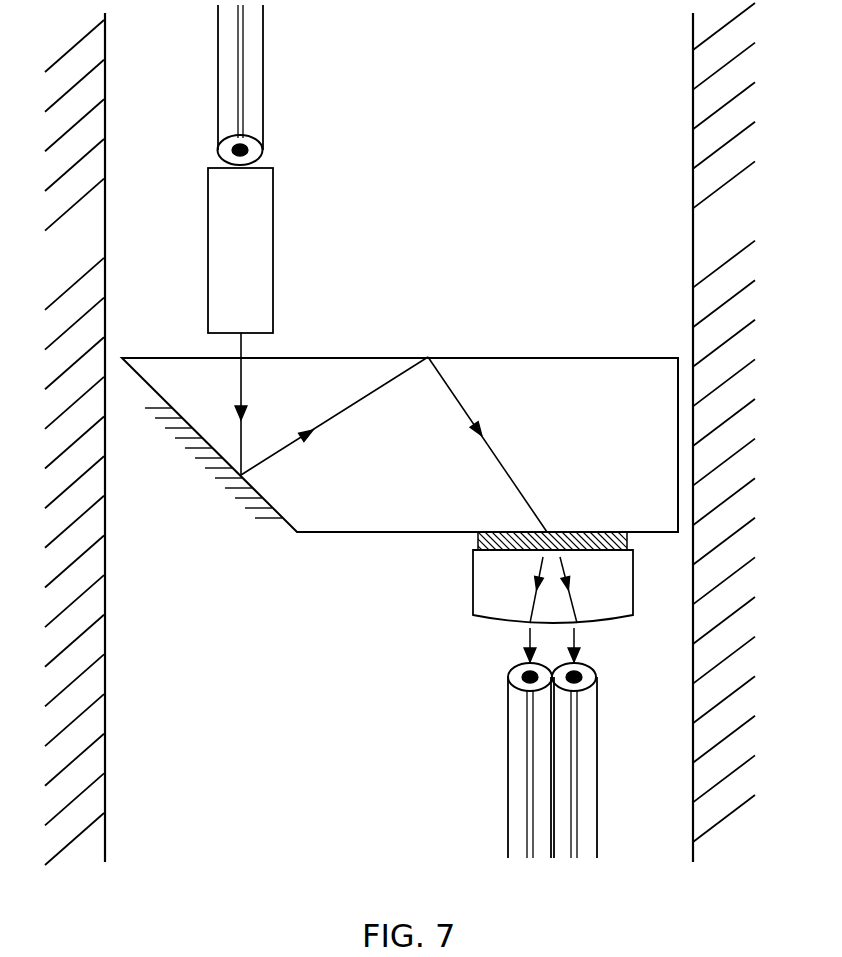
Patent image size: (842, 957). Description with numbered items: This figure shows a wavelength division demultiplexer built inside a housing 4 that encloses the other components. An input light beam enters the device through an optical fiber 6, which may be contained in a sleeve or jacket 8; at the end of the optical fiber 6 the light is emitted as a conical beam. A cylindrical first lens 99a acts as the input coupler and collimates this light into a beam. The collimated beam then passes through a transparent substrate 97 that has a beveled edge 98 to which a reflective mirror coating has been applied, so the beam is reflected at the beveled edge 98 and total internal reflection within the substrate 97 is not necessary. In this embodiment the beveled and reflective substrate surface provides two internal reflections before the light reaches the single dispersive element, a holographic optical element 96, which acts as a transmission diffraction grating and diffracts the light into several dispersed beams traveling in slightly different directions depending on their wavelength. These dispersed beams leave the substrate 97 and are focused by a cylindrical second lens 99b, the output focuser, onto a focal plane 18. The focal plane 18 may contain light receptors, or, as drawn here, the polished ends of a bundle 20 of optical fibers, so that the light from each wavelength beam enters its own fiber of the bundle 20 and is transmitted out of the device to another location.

The housing 4 is at (400, 434).
The optical fiber 6 is at (252, 60).
The sleeve or jacket 8 is at (256, 148).
The cylindrical first lens 99a is at (255, 225).
The substrate 97 is at (424, 503).
The beveled edge 98 is at (228, 493).
The holographic optical element 96 is at (476, 539).
The cylindrical second lens 99b is at (480, 587).
The focal plane 18 is at (508, 677).
The bundle of optical fibers 20 is at (517, 763).